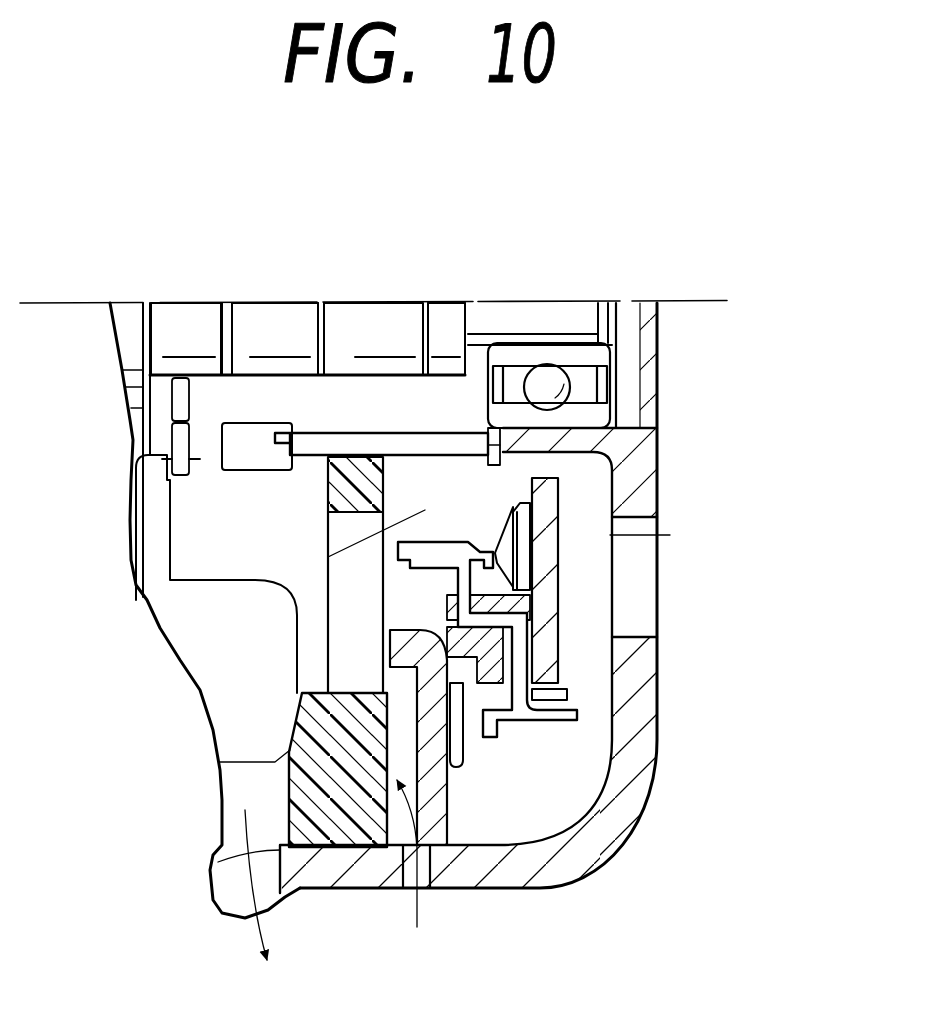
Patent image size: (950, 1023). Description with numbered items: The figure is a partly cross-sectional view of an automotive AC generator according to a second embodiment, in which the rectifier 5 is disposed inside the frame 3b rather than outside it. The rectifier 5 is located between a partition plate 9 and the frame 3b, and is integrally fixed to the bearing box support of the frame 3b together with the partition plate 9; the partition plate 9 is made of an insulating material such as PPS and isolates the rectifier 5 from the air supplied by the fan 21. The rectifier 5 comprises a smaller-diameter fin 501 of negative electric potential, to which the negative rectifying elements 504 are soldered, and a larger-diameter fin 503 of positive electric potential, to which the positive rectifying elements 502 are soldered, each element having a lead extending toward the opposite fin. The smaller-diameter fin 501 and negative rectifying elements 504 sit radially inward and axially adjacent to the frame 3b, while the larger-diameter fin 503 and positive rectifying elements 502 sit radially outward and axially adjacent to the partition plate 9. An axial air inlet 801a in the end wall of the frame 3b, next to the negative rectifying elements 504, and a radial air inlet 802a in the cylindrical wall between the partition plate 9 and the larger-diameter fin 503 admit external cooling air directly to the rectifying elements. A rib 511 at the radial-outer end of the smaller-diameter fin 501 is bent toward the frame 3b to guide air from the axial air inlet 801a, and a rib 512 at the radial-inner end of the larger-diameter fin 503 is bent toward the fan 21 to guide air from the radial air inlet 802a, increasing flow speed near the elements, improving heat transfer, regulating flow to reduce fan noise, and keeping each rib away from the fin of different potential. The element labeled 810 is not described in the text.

The frame 3b is at (645, 745).
The axial air inlet 801a is at (647, 593).
The fan 21 is at (205, 670).
The rib 512 is at (262, 620).
The negative rectifying element 504 is at (670, 535).
The hub 810 is at (375, 775).
The larger-diameter fin 503 is at (437, 793).
The radial air inlet 802a is at (430, 885).
The partition plate 9 is at (337, 833).
The rib 511 is at (570, 740).
The smaller-diameter fin 501 is at (553, 643).
The positive rectifying element 502 is at (465, 750).
The rectifier 5 is at (503, 800).